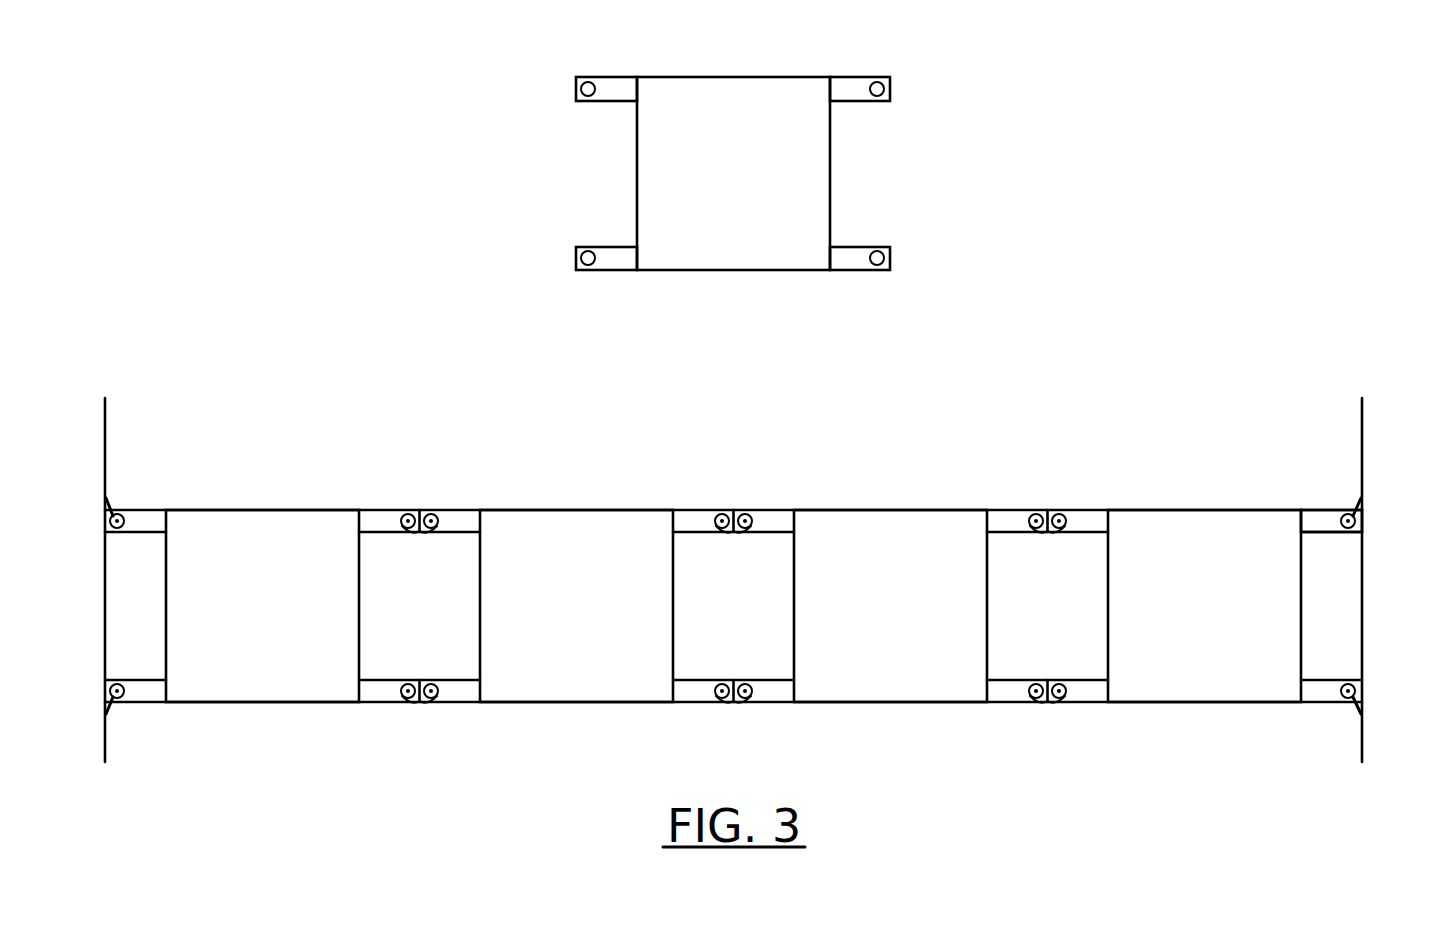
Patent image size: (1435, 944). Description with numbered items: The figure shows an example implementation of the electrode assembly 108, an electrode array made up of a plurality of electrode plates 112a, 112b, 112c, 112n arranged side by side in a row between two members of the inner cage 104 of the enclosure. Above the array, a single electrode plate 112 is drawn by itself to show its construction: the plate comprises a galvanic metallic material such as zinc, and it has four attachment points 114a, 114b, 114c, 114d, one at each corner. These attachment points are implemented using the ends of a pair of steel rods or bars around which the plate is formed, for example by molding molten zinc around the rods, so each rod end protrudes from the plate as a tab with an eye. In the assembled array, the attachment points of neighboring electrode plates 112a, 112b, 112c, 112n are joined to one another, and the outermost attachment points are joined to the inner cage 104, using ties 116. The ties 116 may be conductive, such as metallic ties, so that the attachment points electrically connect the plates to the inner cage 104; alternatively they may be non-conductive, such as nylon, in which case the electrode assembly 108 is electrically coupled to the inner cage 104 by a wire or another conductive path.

The inner cage 104 is at (106, 435).
The electrode assembly 108 is at (468, 383).
The electrode plate 112 is at (724, 77).
The electrode plate 112a is at (243, 507).
The electrode plate 112b is at (568, 507).
The electrode plate 112c is at (883, 508).
The electrode plate 112n is at (1198, 508).
The attachment point 114a is at (603, 76).
The attachment point 114b is at (603, 246).
The attachment point 114c is at (865, 77).
The attachment point 114d is at (867, 246).
The ties 116 is at (1358, 507).